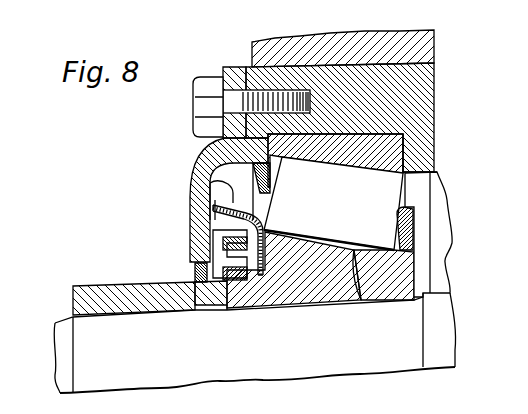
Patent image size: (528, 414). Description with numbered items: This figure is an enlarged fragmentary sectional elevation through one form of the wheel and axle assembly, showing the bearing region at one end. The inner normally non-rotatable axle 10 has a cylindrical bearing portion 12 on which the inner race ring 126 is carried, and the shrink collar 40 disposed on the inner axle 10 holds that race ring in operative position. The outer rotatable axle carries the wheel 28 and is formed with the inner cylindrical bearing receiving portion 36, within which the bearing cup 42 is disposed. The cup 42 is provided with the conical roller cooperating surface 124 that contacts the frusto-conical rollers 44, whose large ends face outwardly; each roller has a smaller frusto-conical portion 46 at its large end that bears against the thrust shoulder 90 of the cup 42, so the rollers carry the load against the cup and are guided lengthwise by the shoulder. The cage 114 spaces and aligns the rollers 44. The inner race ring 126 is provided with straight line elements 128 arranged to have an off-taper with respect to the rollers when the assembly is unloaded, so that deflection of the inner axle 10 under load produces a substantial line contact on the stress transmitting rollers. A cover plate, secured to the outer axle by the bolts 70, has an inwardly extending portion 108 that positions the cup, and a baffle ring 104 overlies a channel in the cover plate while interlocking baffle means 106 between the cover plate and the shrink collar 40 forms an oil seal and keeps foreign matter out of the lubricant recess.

The inner non-rotatable axle 10 is at (446, 355).
The cylindrical bearing portion 12 is at (208, 377).
The wheel 28 is at (417, 44).
The inner cylindrical bearing receiving portion 36 is at (362, 130).
The shrink collar 40 is at (78, 296).
The bearing cup 42 is at (392, 143).
The rollers 44 is at (382, 192).
The smaller frusto-conical portion 46 is at (192, 225).
The bolts 70 is at (200, 102).
The thrust shoulder 90 is at (200, 163).
The baffle ring 104 is at (212, 183).
The interlocking baffle means 106 is at (194, 250).
The inwardly extending portion 108 is at (222, 143).
The cage 114 is at (415, 228).
The conical roller cooperating surface 124 is at (430, 157).
The inner race ring 126 is at (287, 301).
The straight line elements 128 is at (361, 301).